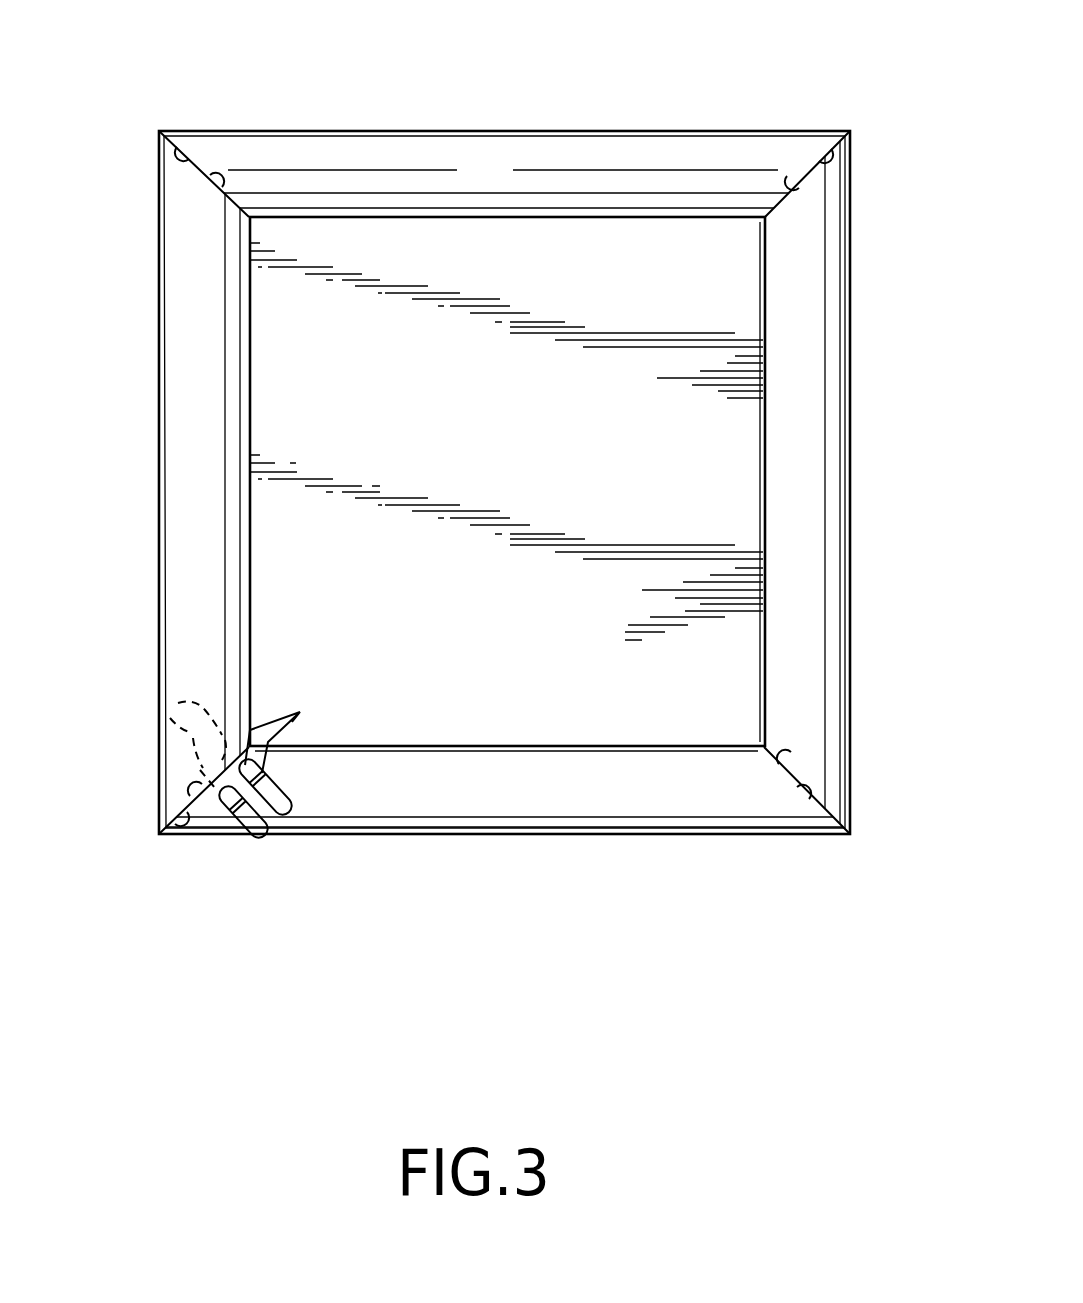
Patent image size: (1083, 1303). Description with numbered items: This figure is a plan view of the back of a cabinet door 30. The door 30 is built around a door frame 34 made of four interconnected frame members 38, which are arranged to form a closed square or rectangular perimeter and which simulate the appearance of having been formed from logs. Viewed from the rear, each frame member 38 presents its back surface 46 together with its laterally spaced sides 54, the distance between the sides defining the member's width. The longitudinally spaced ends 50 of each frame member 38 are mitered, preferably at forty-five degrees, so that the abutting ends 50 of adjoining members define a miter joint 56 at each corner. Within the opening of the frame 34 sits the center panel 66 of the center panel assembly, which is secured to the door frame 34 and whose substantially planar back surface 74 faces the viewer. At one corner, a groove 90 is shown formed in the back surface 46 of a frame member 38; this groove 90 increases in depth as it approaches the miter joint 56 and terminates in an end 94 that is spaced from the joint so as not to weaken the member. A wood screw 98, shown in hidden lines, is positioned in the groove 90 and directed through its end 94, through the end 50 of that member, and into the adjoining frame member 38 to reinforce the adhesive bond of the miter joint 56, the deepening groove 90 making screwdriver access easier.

The door 30 is at (738, 129).
The door frame 34 is at (855, 679).
The frame member 38 is at (345, 129).
The back surface 46 is at (504, 482).
The end 50 is at (192, 158).
The side 54 is at (160, 348).
The miter joint 56 is at (205, 178).
The center panel 66 is at (270, 541).
The back surface 74 is at (507, 481).
The groove 90 is at (285, 797).
The end 94 is at (300, 712).
The wood screw 98 is at (170, 708).